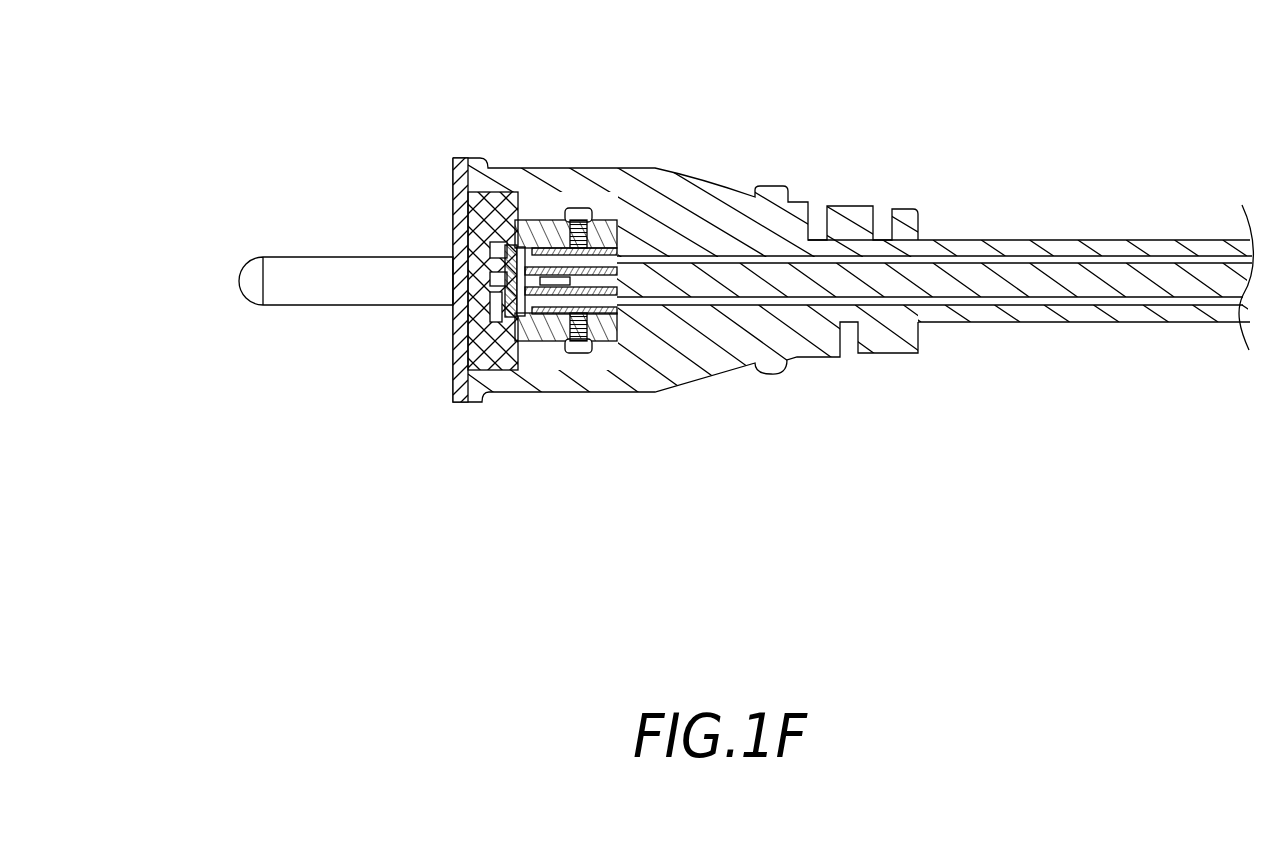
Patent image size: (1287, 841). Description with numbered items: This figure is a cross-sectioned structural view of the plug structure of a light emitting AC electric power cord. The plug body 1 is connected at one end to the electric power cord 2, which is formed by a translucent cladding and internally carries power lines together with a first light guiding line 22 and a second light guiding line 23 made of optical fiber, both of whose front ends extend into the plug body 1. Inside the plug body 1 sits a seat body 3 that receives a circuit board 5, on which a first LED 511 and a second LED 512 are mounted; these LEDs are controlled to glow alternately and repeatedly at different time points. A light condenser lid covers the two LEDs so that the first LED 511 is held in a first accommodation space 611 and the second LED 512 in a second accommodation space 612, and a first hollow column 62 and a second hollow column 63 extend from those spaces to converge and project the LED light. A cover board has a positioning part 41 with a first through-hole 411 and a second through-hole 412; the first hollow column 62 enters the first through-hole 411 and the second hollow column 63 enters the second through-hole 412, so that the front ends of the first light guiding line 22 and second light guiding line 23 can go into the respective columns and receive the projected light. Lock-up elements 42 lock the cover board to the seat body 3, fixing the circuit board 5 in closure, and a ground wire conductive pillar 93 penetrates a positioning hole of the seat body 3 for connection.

The plug body 1 is at (790, 363).
The electric power cord 2 is at (941, 330).
The first light guiding line 22 is at (1012, 262).
The second light guiding line 23 is at (977, 300).
The seat body 3 is at (474, 294).
The circuit board 5 is at (513, 300).
The first LED 511 is at (500, 258).
The second LED 512 is at (522, 205).
The positioning part 41 is at (603, 240).
The first through-hole 411 is at (620, 257).
The lock-up element 42 is at (612, 335).
The second through-hole 412 is at (656, 348).
The first hollow column 62 is at (558, 240).
The second hollow column 63 is at (563, 330).
The first accommodation space 611 is at (529, 245).
The second accommodation space 612 is at (518, 323).
The ground wire conductive pillar 93 is at (241, 293).